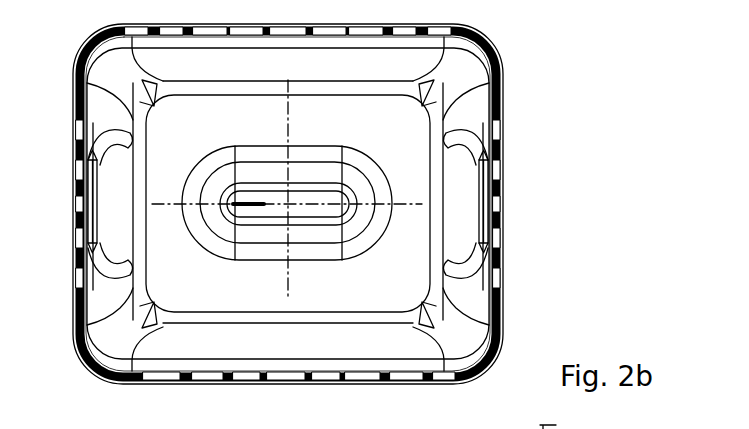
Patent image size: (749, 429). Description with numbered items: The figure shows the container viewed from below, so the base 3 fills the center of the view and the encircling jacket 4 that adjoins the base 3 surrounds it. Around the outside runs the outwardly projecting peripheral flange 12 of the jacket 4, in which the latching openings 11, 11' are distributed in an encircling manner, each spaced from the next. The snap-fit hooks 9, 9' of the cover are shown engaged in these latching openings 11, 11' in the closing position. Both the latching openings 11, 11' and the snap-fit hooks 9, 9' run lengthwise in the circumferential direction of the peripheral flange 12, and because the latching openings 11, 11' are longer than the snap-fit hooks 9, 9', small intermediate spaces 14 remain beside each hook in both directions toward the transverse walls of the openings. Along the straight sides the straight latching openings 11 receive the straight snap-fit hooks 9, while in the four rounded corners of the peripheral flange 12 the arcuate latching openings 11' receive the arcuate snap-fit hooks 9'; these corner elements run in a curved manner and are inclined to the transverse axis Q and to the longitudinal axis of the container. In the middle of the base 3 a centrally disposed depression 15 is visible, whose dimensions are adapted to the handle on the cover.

The base 3 is at (410, 281).
The jacket 4 is at (383, 192).
The snap-fit hook 9 is at (294, 206).
The arcuate snap-fit hook 9' is at (311, 217).
The latching opening 11 is at (326, 226).
The arcuate latching opening 11' is at (321, 190).
The peripheral flange 12 is at (500, 73).
The intermediate space 14 is at (333, 380).
The depression 15 is at (253, 256).
The transverse axis Q is at (290, 113).